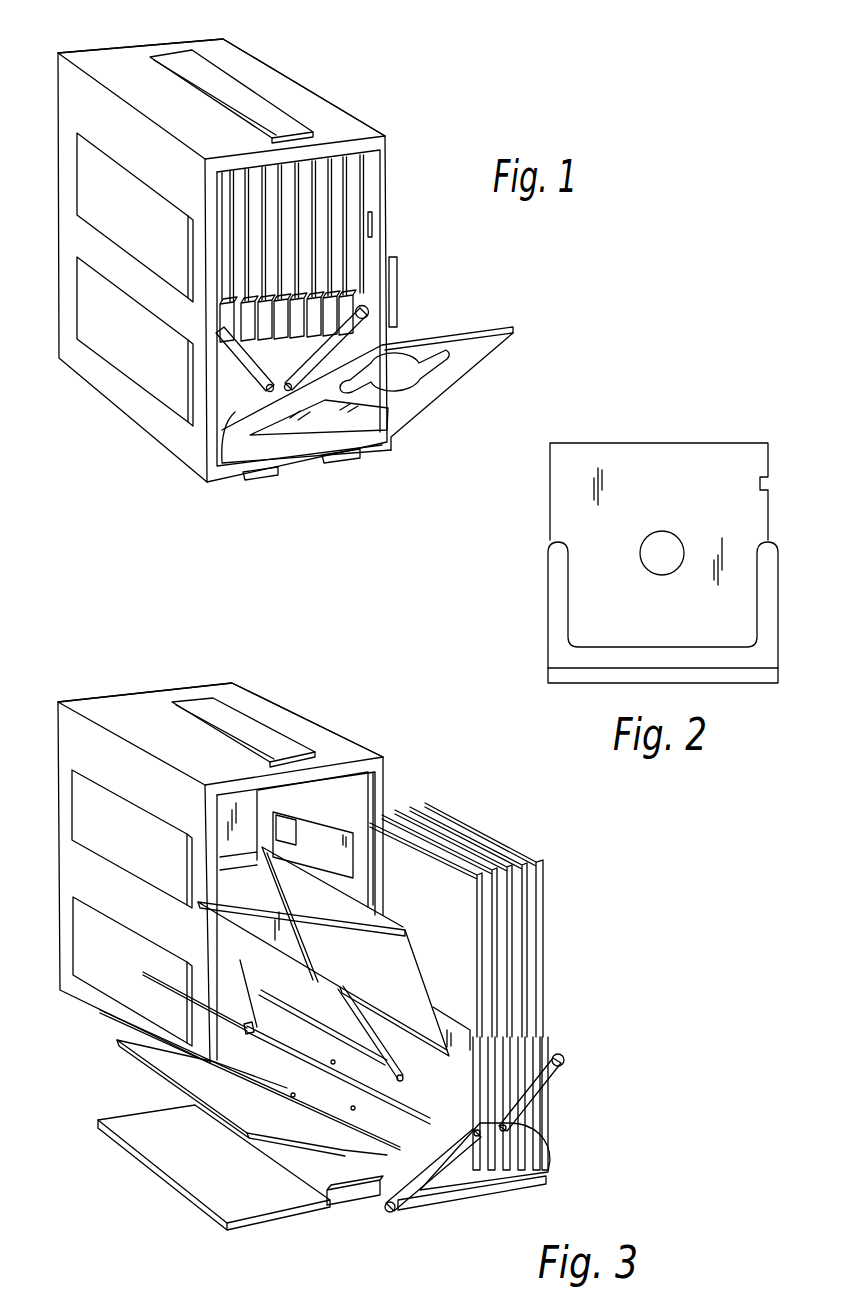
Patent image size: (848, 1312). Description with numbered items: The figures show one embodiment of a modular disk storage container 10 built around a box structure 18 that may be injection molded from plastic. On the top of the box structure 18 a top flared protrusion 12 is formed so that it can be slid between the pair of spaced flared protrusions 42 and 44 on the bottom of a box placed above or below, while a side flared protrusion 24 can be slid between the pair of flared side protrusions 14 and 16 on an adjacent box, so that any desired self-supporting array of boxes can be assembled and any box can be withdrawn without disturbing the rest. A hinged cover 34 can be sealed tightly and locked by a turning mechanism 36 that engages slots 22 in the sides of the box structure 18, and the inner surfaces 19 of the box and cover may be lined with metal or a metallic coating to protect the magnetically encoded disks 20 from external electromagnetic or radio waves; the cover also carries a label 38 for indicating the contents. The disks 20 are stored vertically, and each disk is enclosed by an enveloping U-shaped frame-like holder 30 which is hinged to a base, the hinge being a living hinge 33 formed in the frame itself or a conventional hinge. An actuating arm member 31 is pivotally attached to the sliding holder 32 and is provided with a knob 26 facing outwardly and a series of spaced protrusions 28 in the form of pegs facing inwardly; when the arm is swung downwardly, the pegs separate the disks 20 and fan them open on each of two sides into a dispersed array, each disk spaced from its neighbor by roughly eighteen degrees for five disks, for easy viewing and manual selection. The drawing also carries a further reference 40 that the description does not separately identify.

In FIG. 1, the modular disk storage container 10 is at (85, 20).
In FIG. 3, the modular disk storage container 10 is at (87, 675).
In FIG. 1, the top flared protrusion 12 is at (170, 63).
In FIG. 1, the flared side protrusion 14 is at (82, 187).
In FIG. 1, the flared side protrusion 16 is at (86, 303).
In FIG. 1, the box structure 18 is at (342, 125).
In FIG. 3, the box structure 18 is at (340, 745).
In FIG. 1, the inner surfaces 19 is at (368, 162).
In FIG. 1, the disks 20 is at (350, 217).
In FIG. 2, the disks 20 is at (718, 434).
In FIG. 3, the disks 20 is at (423, 807).
In FIG. 1, the slots 22 is at (375, 227).
In FIG. 1, the side flared protrusion 24 is at (393, 263).
In FIG. 1, the knob 26 is at (367, 297).
In FIG. 3, the knob 26 is at (564, 1062).
In FIG. 1, the spaced protrusions 28 is at (348, 333).
In FIG. 3, the spaced protrusions 28 is at (530, 1057).
In FIG. 1, the U-shaped frame-like holder 30 is at (251, 304).
In FIG. 2, the U-shaped frame-like holder 30 is at (552, 585).
In FIG. 3, the U-shaped frame-like holder 30 is at (547, 1120).
In FIG. 1, the actuating arm member 31 is at (233, 357).
In FIG. 3, the actuating arm member 31 is at (495, 1080).
In FIG. 1, the sliding holder 32 is at (235, 412).
In FIG. 3, the sliding holder 32 is at (533, 1160).
In FIG. 2, the living hinge 33 is at (560, 668).
In FIG. 1, the hinged cover 34 is at (463, 323).
In FIG. 3, the hinged cover 34 is at (488, 1193).
In FIG. 1, the turning mechanism 36 is at (347, 388).
In FIG. 1, the label 38 is at (358, 427).
In FIG. 1, the tray bottom 40 is at (352, 430).
In FIG. 1, the flared protrusion 42 is at (342, 461).
In FIG. 1, the flared protrusion 44 is at (275, 473).